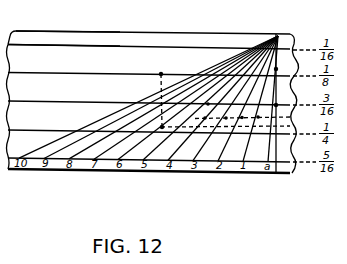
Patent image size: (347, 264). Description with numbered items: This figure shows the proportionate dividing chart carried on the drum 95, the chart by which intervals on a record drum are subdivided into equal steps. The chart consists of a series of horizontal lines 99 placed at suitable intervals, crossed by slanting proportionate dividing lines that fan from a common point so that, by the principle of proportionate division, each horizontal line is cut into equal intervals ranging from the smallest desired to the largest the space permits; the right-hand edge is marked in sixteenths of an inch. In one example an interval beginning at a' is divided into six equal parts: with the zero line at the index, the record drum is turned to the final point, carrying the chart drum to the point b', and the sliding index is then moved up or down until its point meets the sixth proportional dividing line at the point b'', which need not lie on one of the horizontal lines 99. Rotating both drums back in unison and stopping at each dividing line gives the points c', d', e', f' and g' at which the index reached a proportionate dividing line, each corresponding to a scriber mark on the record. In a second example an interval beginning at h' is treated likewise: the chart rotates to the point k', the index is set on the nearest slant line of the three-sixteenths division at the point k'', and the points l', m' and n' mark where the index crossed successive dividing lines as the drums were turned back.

The horizontal lines 99 is at (31, 45).
The drum carrying the proportionate dividing device 95 is at (82, 47).
The point b' is at (160, 92).
The point b'' is at (143, 101).
The point h' is at (291, 103).
The point a' is at (294, 52).
The point k'' is at (189, 92).
The point k' is at (213, 93).
The point l' is at (237, 93).
The point m' is at (276, 21).
The point c' is at (162, 185).
The point d' is at (188, 185).
The point e' is at (213, 185).
The point f' is at (243, 153).
The point g' is at (260, 153).
The point n' is at (290, 149).